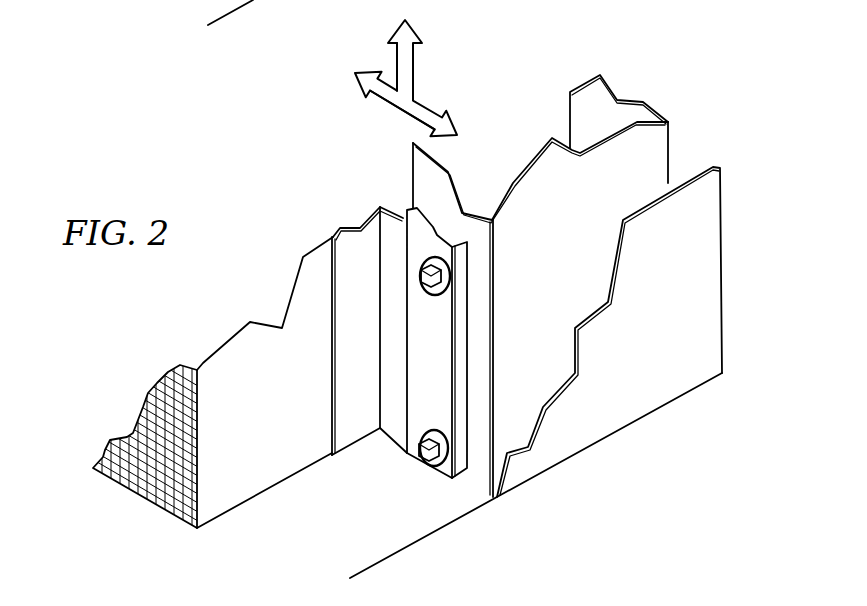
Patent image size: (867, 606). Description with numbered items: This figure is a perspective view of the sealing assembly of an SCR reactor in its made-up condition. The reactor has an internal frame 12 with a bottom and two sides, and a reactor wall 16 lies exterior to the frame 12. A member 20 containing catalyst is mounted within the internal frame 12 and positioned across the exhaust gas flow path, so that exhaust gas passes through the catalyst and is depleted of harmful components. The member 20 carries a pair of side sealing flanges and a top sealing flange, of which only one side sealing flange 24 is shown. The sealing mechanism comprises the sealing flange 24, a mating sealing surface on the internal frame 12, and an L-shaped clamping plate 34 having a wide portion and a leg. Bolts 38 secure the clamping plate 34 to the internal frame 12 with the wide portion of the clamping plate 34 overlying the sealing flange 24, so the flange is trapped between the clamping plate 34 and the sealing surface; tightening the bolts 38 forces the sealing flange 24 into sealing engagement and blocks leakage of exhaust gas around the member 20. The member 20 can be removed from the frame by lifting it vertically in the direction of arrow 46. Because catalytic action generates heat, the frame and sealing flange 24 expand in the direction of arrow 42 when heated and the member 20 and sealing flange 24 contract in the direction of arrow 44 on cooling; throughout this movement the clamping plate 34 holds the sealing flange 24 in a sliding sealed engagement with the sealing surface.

The internal frame 12 is at (540, 150).
The reactor wall 16 is at (722, 285).
The member 20 is at (268, 328).
The side sealing flange 24 is at (352, 435).
The clamping plate 34 is at (460, 383).
The bolts 38 is at (433, 293).
The arrow 42 is at (432, 108).
The arrow 44 is at (384, 100).
The arrow 46 is at (395, 57).